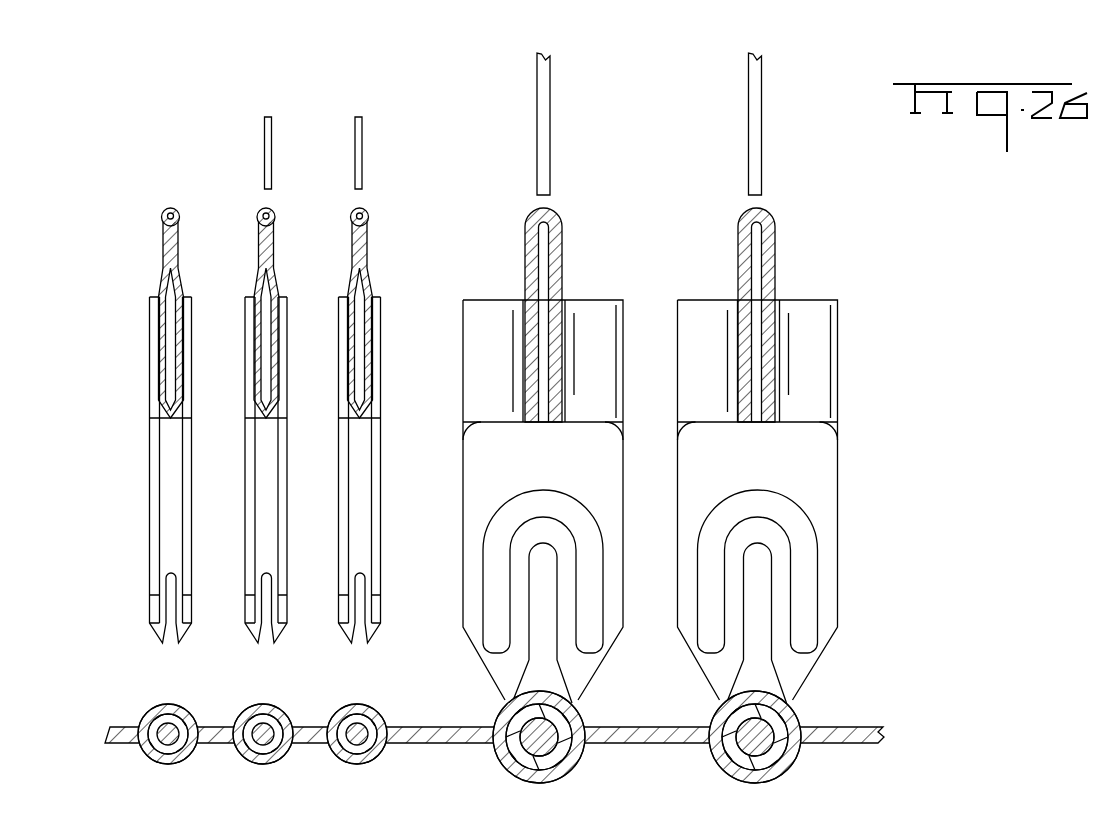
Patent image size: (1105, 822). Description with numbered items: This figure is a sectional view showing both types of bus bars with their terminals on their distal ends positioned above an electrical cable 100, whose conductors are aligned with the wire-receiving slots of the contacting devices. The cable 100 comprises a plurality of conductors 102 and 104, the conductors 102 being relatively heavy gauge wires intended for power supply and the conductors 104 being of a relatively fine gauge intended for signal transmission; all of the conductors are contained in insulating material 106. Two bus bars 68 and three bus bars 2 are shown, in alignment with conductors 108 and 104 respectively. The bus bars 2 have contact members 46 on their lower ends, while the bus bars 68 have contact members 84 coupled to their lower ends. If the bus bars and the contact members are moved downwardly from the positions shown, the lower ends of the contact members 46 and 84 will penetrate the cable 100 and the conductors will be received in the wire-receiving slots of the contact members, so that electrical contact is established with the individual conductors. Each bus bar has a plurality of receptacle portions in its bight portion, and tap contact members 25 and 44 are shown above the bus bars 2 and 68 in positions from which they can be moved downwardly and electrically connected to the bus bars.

The bus bar 2 is at (280, 250).
The tap contact member 25 is at (362, 150).
The contact member 46 is at (386, 302).
The tap contact member 44 is at (547, 128).
The bus bar 68 is at (565, 224).
The contact member 84 is at (598, 289).
The cable 100 is at (554, 707).
The conductor 102 is at (778, 756).
The conductor 104 is at (365, 725).
The insulating material 106 is at (863, 731).
The conductor 108 is at (545, 732).